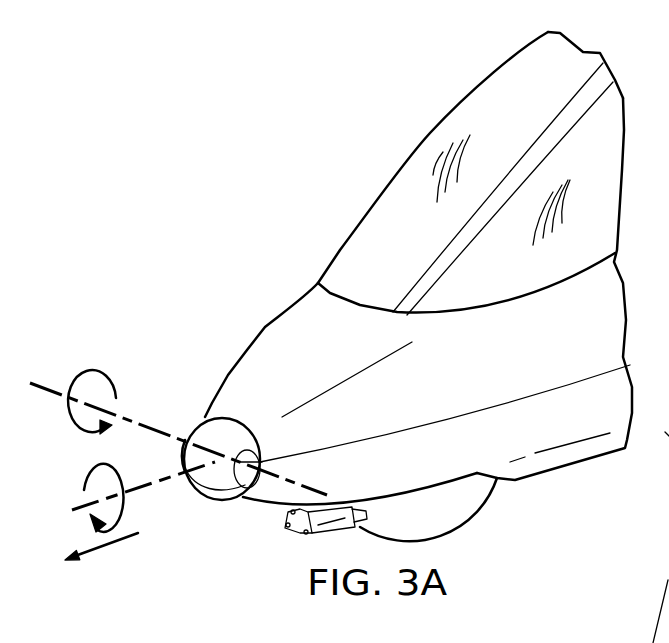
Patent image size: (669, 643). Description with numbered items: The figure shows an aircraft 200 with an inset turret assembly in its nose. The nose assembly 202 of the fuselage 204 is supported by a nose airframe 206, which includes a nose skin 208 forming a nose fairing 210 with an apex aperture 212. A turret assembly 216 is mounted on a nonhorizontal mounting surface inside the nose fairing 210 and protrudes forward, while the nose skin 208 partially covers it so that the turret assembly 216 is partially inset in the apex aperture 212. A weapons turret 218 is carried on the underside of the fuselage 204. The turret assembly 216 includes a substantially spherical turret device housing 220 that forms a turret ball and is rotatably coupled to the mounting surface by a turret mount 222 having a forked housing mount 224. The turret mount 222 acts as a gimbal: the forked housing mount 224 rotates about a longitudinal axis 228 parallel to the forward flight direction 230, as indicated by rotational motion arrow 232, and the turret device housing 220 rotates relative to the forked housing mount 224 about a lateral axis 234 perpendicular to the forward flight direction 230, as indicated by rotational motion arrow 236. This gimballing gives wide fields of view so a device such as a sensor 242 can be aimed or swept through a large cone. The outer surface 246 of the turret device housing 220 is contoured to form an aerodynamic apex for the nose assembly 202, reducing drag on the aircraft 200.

The aircraft 200 is at (314, 150).
The nose assembly 202 is at (261, 321).
The fuselage 204 is at (590, 457).
The nose airframe 206 is at (300, 310).
The nose skin 208 is at (419, 219).
The nose fairing 210 is at (250, 357).
The apex aperture 212 is at (231, 434).
The turret assembly 216 is at (212, 418).
The weapons turret 218 is at (463, 507).
The turret device housing 220 is at (184, 455).
The turret mount 222 is at (231, 490).
The forked housing mount 224 is at (262, 462).
The longitudinal axis 228 is at (140, 484).
The forward flight direction 230 is at (112, 545).
The rotational motion arrow 232 is at (80, 484).
The lateral axis 234 is at (45, 383).
The rotational motion arrow 236 is at (100, 372).
The sensor 242 is at (197, 500).
The outer surface 246 is at (187, 443).